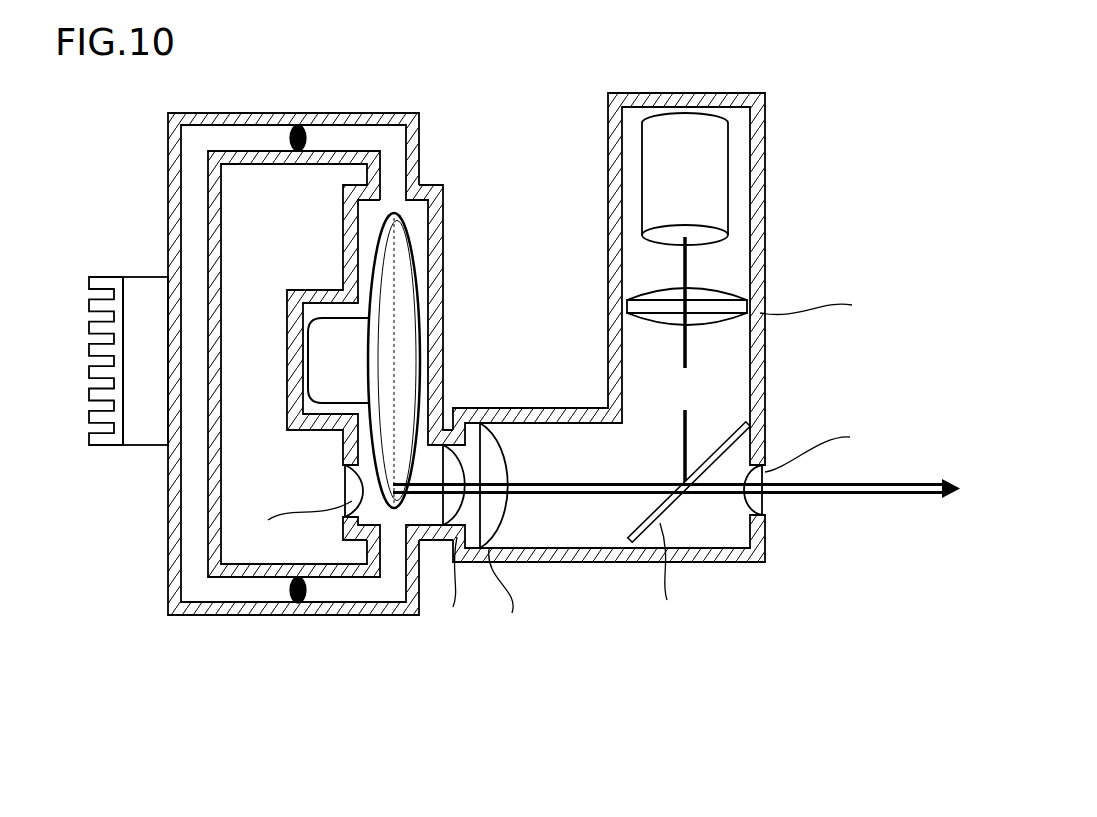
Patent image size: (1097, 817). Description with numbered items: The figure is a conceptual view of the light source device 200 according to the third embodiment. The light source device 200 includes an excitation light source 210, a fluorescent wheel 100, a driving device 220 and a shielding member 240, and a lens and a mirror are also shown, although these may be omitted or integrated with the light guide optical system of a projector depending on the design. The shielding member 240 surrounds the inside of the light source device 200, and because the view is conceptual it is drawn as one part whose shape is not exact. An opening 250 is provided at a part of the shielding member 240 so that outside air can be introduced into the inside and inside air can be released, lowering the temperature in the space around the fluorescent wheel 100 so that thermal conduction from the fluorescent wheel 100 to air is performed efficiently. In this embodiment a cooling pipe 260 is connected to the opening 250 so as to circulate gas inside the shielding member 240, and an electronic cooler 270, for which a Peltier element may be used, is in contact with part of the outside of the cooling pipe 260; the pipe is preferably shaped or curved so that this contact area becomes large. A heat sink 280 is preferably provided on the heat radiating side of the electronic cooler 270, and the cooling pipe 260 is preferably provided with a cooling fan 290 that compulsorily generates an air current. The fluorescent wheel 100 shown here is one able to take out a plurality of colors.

The fluorescent wheel 100 is at (372, 252).
The light source device 200 is at (540, 702).
The excitation light source 210 is at (728, 184).
The driving device 220 is at (308, 367).
The shielding member 240 is at (527, 408).
The opening 250 is at (392, 193).
The cooling pipe 260 is at (193, 558).
The electronic cooler 270 is at (147, 277).
The heat sink 280 is at (112, 277).
The cooling fan 290 is at (298, 124).